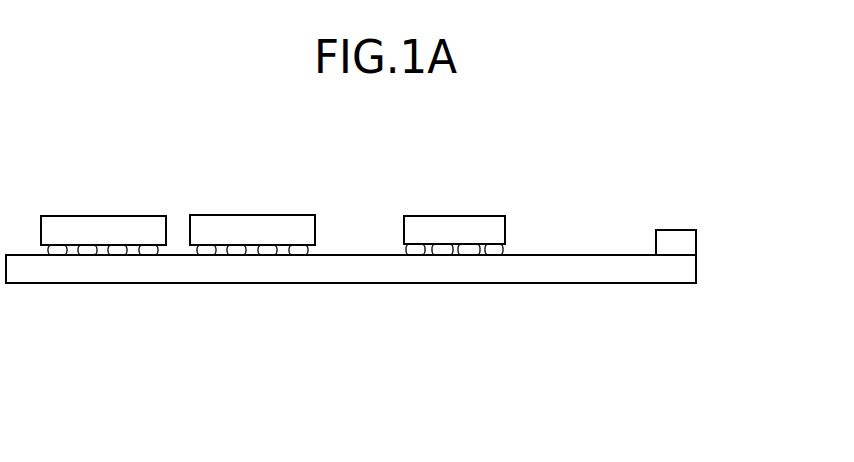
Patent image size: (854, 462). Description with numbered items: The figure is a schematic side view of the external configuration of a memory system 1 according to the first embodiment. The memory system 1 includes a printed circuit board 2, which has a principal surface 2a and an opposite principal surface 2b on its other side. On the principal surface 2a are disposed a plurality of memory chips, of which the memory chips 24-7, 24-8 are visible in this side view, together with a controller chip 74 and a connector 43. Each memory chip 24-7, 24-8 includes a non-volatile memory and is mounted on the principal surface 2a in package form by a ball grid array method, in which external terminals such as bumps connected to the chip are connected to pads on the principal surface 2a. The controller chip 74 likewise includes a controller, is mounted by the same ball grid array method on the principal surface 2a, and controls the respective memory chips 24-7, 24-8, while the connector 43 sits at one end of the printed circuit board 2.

The memory system 1 is at (665, 353).
The printed circuit board 2 is at (687, 268).
The principal surface 2a is at (598, 254).
The principal surface 2b is at (572, 283).
The connector 43 is at (677, 230).
The controller chip 74 is at (460, 216).
The memory chip 24-7 is at (245, 215).
The memory chip 24-8 is at (97, 216).